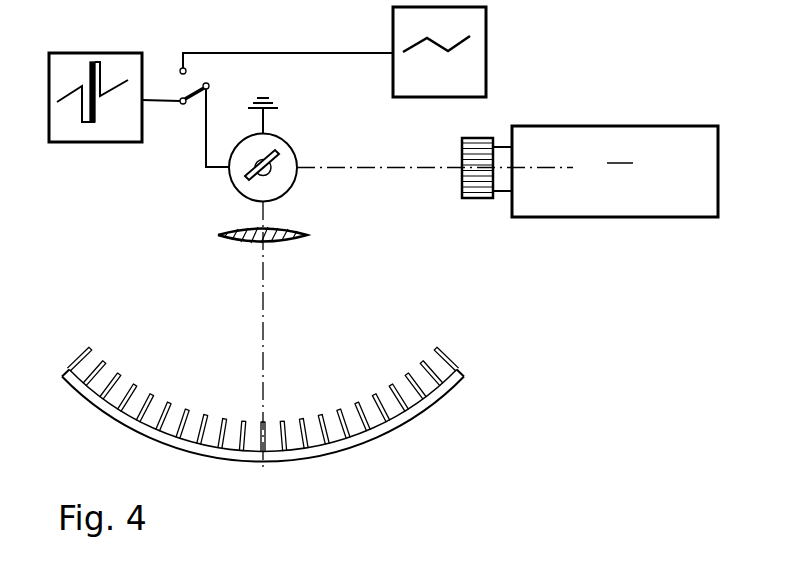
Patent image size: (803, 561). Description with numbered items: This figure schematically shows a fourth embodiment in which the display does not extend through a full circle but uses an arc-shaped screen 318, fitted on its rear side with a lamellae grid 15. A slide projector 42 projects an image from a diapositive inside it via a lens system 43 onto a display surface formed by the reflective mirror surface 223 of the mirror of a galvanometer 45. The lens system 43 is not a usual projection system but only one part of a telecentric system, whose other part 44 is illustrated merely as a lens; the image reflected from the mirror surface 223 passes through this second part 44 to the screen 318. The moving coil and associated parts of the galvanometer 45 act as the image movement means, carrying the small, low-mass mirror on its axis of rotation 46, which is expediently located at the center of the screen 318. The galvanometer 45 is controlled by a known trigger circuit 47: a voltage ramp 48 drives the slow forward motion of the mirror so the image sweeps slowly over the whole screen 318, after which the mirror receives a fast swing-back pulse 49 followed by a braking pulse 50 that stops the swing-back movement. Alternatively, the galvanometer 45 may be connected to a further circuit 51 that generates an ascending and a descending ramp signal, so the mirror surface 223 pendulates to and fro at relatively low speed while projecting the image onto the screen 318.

The lamellae grid 15 is at (123, 375).
The slide projector 42 is at (615, 171).
The lens system 43 is at (482, 207).
The second part of the telecentric system 44 is at (287, 240).
The galvanometer 45 is at (231, 196).
The axis of rotation 46 is at (258, 157).
The trigger circuit 47 is at (123, 143).
The voltage ramp 48 is at (66, 93).
The fast swing-back pulse 49 is at (88, 123).
The braking pulse 50 is at (100, 72).
The further circuit 51 is at (486, 45).
The reflective mirror surface 223 is at (277, 147).
The arc-shaped screen 318 is at (388, 437).